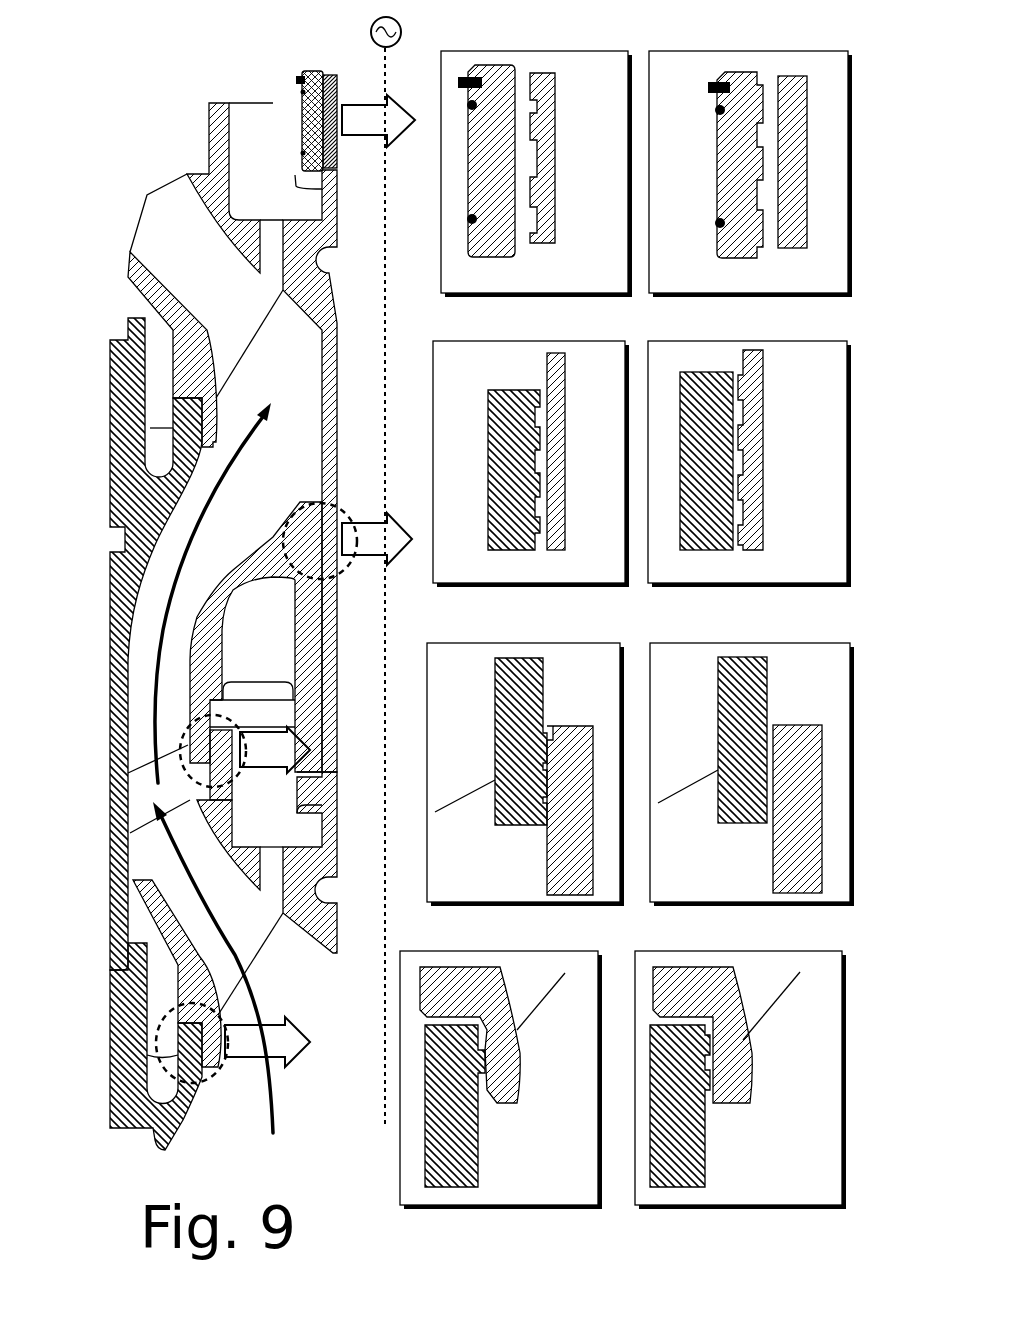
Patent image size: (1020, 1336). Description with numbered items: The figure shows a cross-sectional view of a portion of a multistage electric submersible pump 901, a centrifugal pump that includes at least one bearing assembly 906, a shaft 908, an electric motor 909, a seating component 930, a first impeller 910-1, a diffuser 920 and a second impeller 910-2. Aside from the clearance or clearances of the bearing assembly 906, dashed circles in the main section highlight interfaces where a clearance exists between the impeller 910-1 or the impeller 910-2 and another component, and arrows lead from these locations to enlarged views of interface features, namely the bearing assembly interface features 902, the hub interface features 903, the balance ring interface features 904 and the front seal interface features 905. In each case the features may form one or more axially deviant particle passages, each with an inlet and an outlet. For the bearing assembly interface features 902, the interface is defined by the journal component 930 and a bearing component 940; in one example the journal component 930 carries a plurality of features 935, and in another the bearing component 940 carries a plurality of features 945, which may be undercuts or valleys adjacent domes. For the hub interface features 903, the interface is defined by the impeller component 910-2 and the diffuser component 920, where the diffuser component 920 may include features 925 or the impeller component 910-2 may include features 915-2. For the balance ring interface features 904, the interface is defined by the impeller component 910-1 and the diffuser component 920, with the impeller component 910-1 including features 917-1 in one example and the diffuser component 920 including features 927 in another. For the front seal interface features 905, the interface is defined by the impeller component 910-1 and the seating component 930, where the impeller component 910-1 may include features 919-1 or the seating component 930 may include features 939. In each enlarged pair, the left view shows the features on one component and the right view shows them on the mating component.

The multistage electric submersible pump 901 is at (131, 108).
The bearing assembly interface features 902 is at (646, 157).
The hub interface features 903 is at (642, 450).
The balance ring interface features 904 is at (640, 760).
The front seal interface features 905 is at (623, 1066).
The bearing assembly 906 is at (300, 78).
The shaft 908 is at (383, 70).
The electric motor 909 is at (371, 29).
The first impeller 910-1 is at (330, 953).
The second impeller 910-2 is at (320, 258).
The features 915-2 is at (742, 530).
The features 917-1 is at (545, 800).
The features 919-1 is at (480, 1092).
The diffuser 920 is at (128, 317).
The features 925 is at (537, 538).
The features 927 is at (767, 808).
The seating component 930 is at (193, 1100).
The features 935 is at (532, 223).
The features 939 is at (710, 1083).
The bearing component 940 is at (495, 260).
The features 945 is at (760, 222).